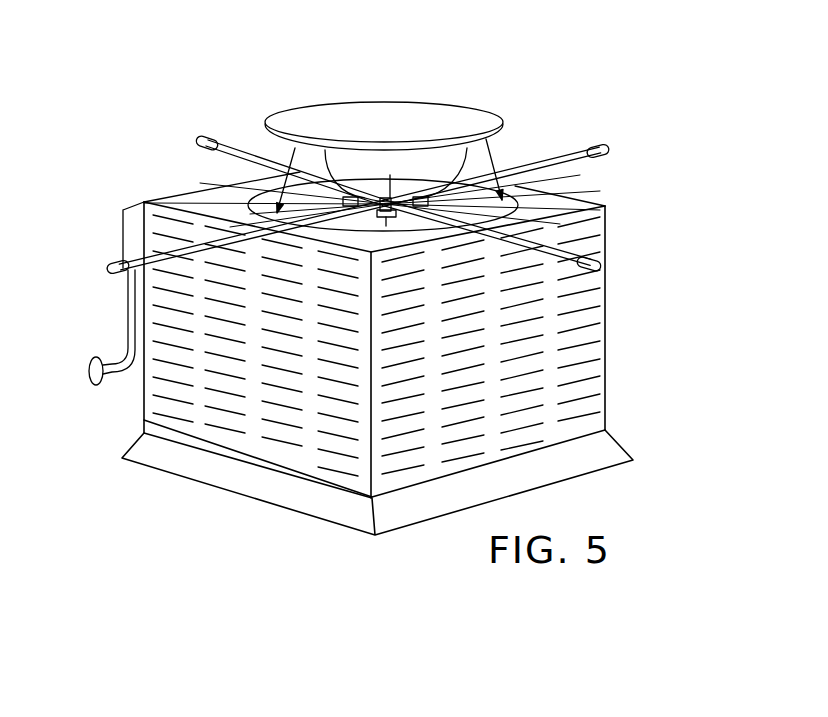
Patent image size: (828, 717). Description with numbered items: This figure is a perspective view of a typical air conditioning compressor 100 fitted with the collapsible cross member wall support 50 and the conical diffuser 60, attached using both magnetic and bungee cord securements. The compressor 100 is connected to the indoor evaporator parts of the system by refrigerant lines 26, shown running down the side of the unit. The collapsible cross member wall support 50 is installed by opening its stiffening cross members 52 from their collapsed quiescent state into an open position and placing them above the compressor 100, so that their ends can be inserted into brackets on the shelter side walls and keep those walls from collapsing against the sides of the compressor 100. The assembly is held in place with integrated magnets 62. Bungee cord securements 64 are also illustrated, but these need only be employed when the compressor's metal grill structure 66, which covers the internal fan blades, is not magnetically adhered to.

The refrigerant lines 26 is at (128, 320).
The collapsible cross member wall support 50 is at (552, 153).
The stiffening cross members 52 is at (200, 140).
The conical diffuser 60 is at (440, 117).
The integrated magnets 62 is at (143, 203).
The bungee cord securements 64 is at (262, 172).
The metal grill structure 66 is at (257, 188).
The compressor 100 is at (650, 326).